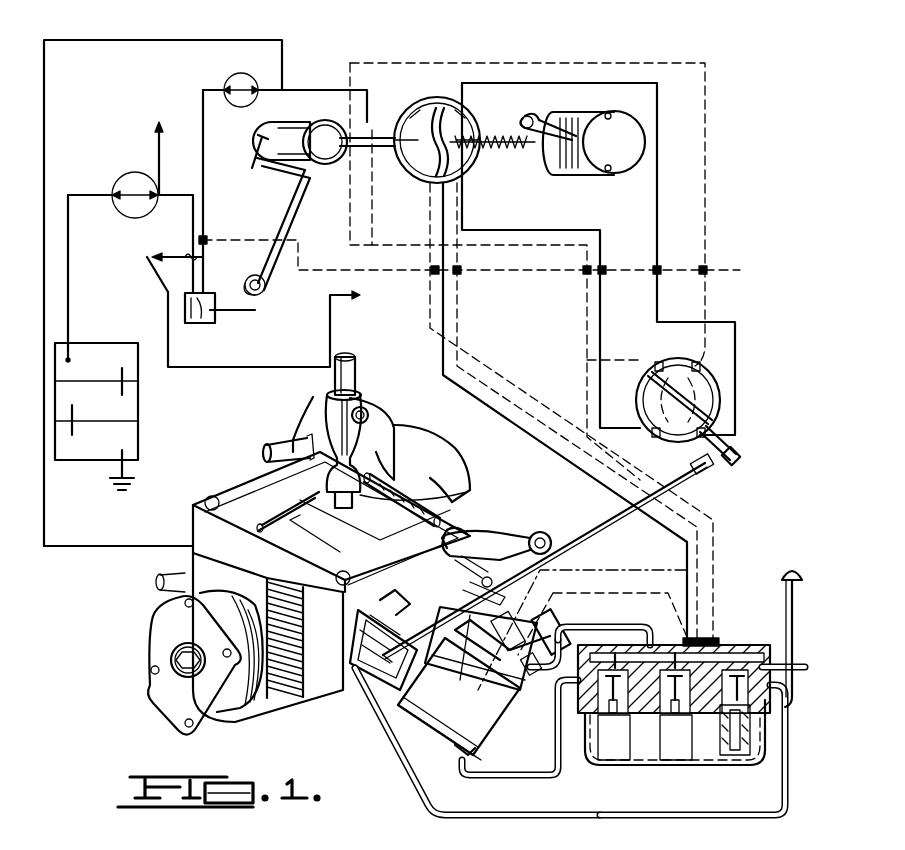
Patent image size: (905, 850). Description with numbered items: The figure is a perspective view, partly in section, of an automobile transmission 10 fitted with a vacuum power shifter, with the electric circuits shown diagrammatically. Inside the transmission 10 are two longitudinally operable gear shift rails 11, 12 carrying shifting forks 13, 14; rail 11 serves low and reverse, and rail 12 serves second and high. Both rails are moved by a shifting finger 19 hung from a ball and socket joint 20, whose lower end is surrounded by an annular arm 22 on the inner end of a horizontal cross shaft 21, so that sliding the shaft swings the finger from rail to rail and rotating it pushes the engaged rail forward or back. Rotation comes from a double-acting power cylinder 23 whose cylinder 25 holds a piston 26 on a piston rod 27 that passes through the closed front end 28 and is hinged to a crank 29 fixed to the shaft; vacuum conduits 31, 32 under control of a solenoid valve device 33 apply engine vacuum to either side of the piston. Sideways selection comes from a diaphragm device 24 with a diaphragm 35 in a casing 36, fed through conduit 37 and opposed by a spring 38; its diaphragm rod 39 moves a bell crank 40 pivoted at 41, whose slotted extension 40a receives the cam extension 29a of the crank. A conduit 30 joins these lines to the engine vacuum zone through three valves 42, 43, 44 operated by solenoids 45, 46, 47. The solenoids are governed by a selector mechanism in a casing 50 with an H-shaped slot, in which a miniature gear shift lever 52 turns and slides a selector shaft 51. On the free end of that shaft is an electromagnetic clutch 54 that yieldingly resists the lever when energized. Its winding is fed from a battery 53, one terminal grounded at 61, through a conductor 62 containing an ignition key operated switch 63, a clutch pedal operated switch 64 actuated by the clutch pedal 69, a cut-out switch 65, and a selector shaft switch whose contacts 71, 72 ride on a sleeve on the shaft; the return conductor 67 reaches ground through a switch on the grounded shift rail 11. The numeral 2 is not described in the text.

The fuel gauge 2 is at (535, 462).
The automobile transmission 10 is at (249, 467).
The gear shift rail 11 is at (445, 486).
The gear shift rail 12 is at (222, 492).
The shifting fork 13 is at (448, 502).
The shifting fork 14 is at (262, 478).
The shifting finger 19 is at (382, 445).
The ball and socket joint 20 is at (360, 395).
The horizontal cross shaft 21 is at (460, 528).
The annular arm 22 is at (292, 442).
The power cylinder 23 is at (440, 740).
The diaphragm device 24 is at (380, 706).
The cylinder 25 is at (480, 750).
The piston 26 is at (534, 692).
The piston rod 27 is at (548, 566).
The closed front end 28 is at (425, 662).
The crank 29 is at (486, 568).
The cam extension 29a is at (518, 542).
The conduit 30 is at (800, 664).
The vacuum conduit 31 is at (576, 626).
The vacuum conduit 32 is at (529, 778).
The solenoid valve device 33 is at (754, 640).
The diaphragm 35 is at (459, 699).
The casing 36 is at (383, 644).
The conduit 37 is at (626, 816).
The spring 38 is at (355, 690).
The diaphragm rod 39 is at (392, 653).
The bell crank 40 is at (346, 550).
The slotted extension 40a is at (336, 523).
The pivot 41 is at (393, 599).
The valve 42 is at (610, 646).
The valve 43 is at (644, 694).
The valve 44 is at (772, 710).
The solenoid 45 is at (608, 760).
The solenoid 46 is at (670, 760).
The solenoid 47 is at (736, 756).
The casing 50 is at (628, 140).
The selector shaft 51 is at (492, 136).
The miniature gear shift lever 52 is at (532, 117).
The battery 53 is at (97, 342).
The electromagnetic clutch 54 is at (298, 110).
The ground 61 is at (114, 482).
The conductor 62 is at (70, 264).
The ignition key operated switch 63 is at (130, 177).
The clutch pedal operated switch 64 is at (212, 323).
The cut-out switch 65 is at (227, 82).
The conductor 67 is at (158, 40).
The clutch pedal 69 is at (256, 166).
The contact 71 is at (400, 126).
The contact 72 is at (414, 170).